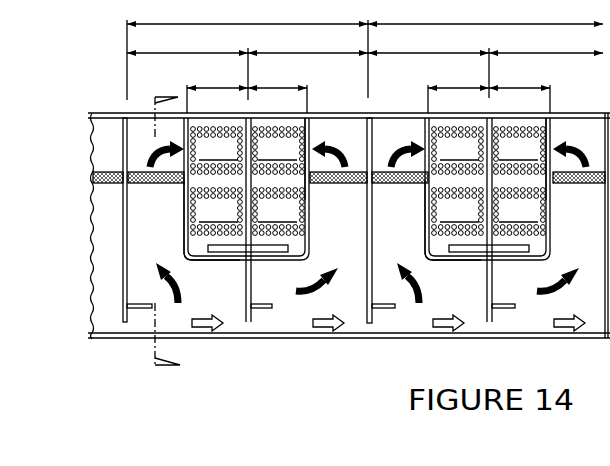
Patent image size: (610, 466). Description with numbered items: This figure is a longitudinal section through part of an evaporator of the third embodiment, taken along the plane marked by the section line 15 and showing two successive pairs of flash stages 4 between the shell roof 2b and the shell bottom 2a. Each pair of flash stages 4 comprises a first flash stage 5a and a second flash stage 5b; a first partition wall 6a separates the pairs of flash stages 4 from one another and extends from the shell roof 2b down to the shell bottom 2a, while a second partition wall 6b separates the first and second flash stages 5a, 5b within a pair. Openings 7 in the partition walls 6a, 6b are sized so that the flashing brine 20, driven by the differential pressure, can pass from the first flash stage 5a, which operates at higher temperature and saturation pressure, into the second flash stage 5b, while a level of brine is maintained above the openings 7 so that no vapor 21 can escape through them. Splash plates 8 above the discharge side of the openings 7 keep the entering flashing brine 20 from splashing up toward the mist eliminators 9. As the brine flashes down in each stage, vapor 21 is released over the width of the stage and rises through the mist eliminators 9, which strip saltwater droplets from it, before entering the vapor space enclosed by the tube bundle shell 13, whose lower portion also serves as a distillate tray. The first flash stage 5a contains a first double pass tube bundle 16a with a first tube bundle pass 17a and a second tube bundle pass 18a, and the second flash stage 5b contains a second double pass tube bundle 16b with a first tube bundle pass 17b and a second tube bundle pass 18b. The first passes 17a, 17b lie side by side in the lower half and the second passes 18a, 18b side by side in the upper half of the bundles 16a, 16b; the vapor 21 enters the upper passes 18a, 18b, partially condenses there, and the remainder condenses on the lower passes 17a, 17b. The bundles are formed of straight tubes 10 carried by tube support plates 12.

The pair of flash stages 4 is at (233, 23).
The first flash stage 5a is at (170, 53).
The second flash stage 5b is at (278, 53).
The first double pass tube bundle 16a is at (194, 87).
The second double pass tube bundle 16b is at (273, 88).
The section line 15- 15 is at (175, 232).
The shell bottom 2a is at (277, 243).
The shell roof 2b is at (560, 113).
The first partition wall 6a is at (123, 297).
The second partition wall 6b is at (245, 308).
The opening 7 is at (375, 332).
The splash plate 8 is at (402, 303).
The mist eliminator 9 is at (168, 184).
The tube 10 is at (343, 174).
The tube support plate 12 is at (312, 128).
The tube bundle shell 13 is at (182, 236).
The first tube bundle pass 17a is at (337, 212).
The first tube bundle pass 17b is at (399, 212).
The second tube bundle pass 18a is at (337, 151).
The second tube bundle pass 18b is at (399, 151).
The flashing brine 20 is at (330, 327).
The vapor 21 is at (298, 296).